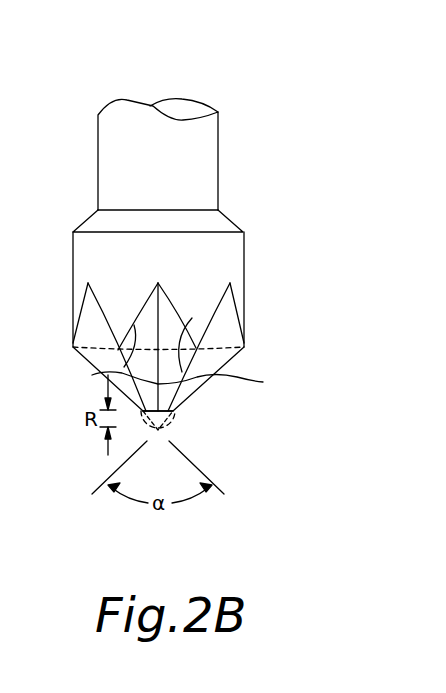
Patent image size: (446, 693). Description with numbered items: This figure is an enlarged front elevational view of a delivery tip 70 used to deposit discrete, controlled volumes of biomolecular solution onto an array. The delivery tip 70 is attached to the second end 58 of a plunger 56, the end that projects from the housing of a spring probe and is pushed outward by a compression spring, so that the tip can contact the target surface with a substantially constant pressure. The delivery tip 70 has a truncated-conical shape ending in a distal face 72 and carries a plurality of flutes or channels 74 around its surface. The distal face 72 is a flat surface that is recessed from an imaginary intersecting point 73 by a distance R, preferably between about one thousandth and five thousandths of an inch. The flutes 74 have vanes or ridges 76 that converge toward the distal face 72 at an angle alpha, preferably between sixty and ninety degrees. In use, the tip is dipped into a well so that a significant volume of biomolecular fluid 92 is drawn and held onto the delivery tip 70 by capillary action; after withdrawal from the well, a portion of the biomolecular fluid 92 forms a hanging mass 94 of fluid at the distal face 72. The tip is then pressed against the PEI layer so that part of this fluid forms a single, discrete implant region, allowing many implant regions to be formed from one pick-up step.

The plunger 56 is at (182, 105).
The second end 58 is at (207, 138).
The delivery tip 70 is at (262, 275).
The distal face 72 is at (170, 416).
The imaginary intersecting point 73 is at (177, 432).
The flutes 74 is at (112, 357).
The vanes 76 is at (134, 325).
The biomolecular fluid 92 is at (232, 343).
The hanging mass 94 is at (158, 432).